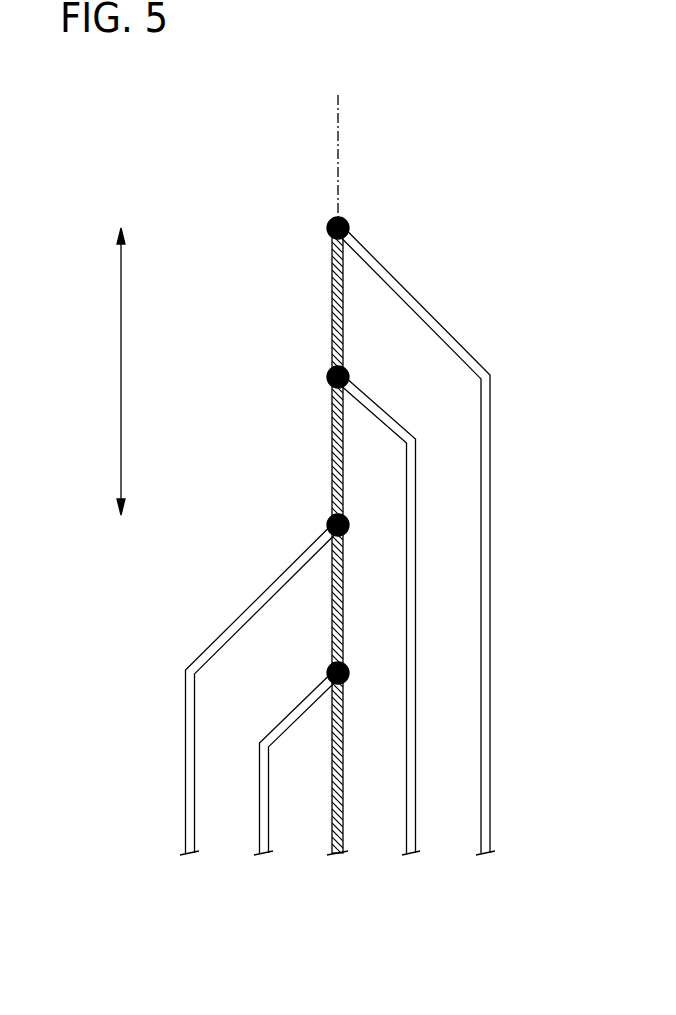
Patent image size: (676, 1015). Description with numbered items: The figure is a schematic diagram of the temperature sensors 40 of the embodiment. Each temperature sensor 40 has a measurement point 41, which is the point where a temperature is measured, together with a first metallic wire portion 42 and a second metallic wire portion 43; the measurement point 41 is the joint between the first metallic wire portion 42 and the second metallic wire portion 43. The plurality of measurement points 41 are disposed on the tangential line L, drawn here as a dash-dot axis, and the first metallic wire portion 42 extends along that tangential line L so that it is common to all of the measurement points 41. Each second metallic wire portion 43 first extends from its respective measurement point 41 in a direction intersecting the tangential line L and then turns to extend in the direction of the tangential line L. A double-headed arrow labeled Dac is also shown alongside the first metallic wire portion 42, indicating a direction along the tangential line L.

The temperature sensor 40 is at (460, 310).
The measurement point 41 is at (349, 221).
The first metallic wire portion 42 is at (335, 310).
The second metallic wire portion 43 is at (400, 428).
The tangential line L is at (338, 148).
The direction Dac is at (97, 371).